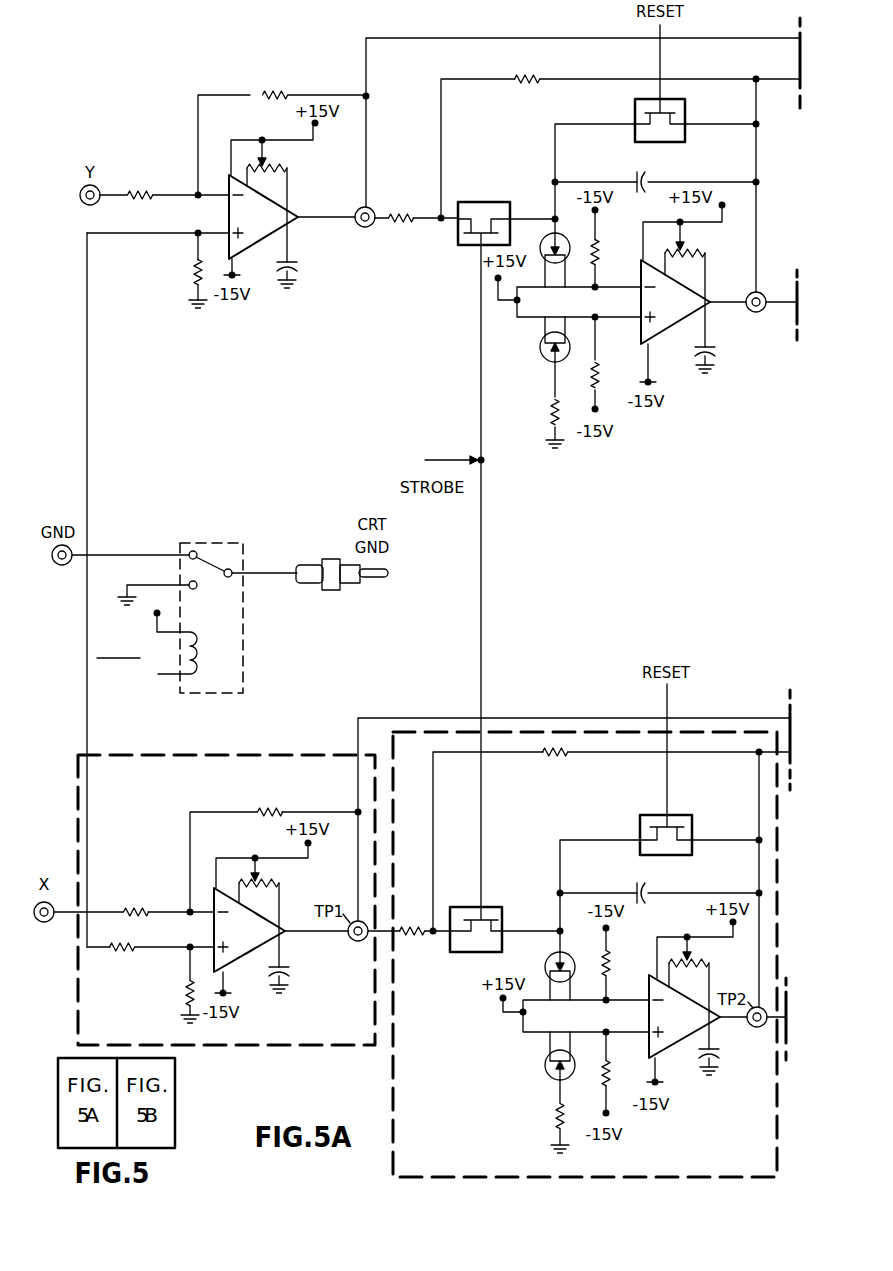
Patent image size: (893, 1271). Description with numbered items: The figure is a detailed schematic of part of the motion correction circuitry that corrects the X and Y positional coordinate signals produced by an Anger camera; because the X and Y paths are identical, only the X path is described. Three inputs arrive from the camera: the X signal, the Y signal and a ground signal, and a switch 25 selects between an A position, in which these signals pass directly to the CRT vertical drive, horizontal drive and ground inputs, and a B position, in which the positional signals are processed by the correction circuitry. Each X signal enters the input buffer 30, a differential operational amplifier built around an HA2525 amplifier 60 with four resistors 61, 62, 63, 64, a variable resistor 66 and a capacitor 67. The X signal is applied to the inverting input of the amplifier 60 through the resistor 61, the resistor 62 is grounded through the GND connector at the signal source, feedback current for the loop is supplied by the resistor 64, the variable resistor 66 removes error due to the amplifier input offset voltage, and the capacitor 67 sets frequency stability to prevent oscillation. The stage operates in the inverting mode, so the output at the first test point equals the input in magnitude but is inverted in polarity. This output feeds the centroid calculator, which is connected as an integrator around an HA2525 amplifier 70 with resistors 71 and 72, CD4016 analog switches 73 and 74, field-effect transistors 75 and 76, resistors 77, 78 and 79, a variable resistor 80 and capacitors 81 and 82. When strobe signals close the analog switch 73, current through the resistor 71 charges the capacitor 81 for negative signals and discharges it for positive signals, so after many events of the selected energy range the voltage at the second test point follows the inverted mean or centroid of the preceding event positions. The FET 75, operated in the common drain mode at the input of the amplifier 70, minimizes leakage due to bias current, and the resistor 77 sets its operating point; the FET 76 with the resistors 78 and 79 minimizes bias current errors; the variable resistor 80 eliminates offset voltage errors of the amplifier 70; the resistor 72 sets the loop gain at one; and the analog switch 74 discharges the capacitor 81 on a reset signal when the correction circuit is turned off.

The switch 25 is at (240, 670).
The input buffer 30 is at (352, 1025).
The amplifier 60 is at (234, 953).
The resistor 61 is at (136, 897).
The resistor 62 is at (122, 962).
The resistor 63 is at (178, 993).
The resistor 64 is at (270, 800).
The variable resistor 66 is at (279, 883).
The capacitor 67 is at (288, 971).
The amplifier 70 is at (666, 1047).
The resistor 71 is at (412, 945).
The resistor 72 is at (546, 762).
The analog switch 73 is at (490, 912).
The analog switch 74 is at (645, 815).
The field-effect transistor 75 is at (546, 962).
The field-effect transistor 76 is at (545, 1067).
The resistor 77 is at (611, 970).
The resistor 78 is at (609, 1072).
The resistor 79 is at (550, 1115).
The variable resistor 80 is at (710, 962).
The capacitor 81 is at (640, 887).
The capacitor 82 is at (716, 1056).